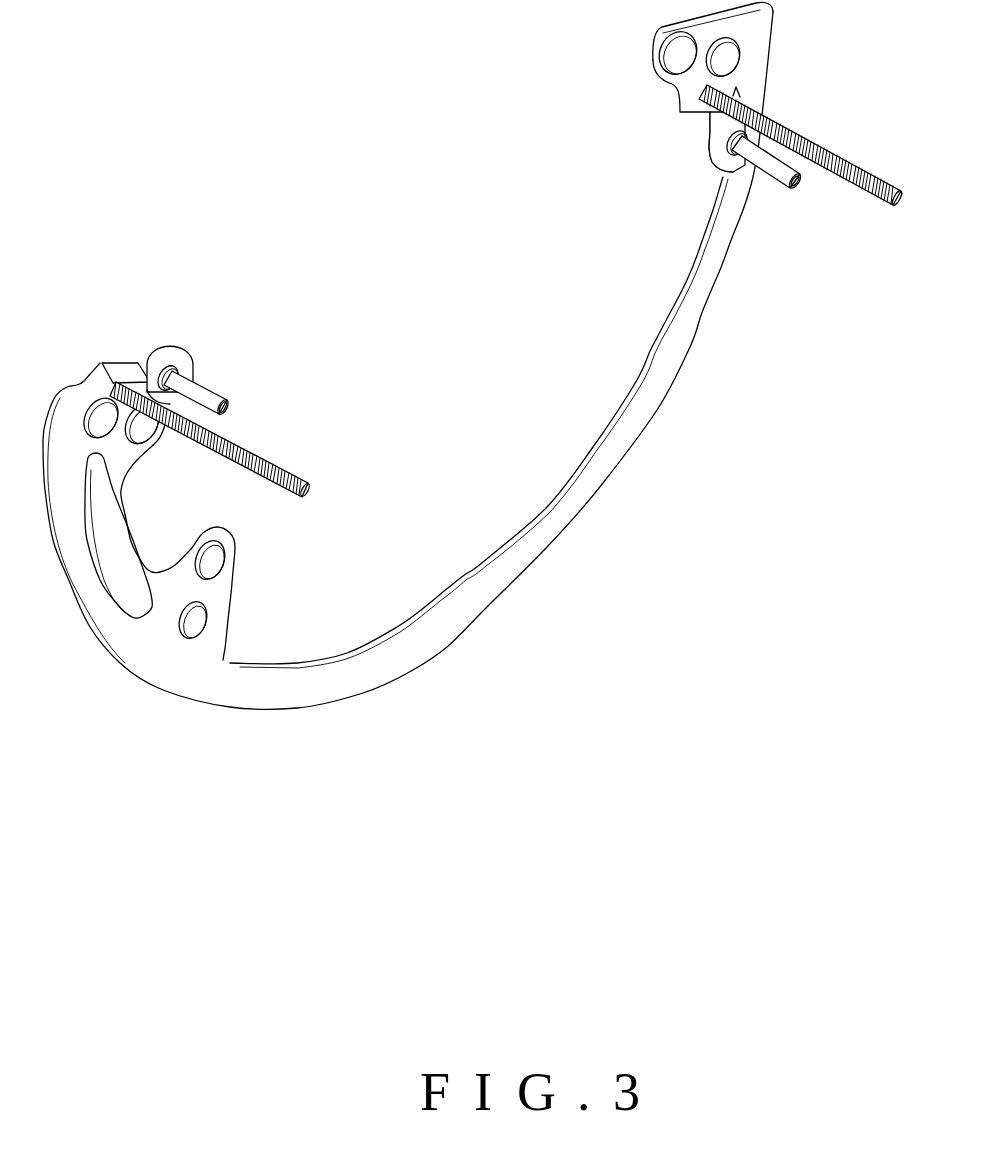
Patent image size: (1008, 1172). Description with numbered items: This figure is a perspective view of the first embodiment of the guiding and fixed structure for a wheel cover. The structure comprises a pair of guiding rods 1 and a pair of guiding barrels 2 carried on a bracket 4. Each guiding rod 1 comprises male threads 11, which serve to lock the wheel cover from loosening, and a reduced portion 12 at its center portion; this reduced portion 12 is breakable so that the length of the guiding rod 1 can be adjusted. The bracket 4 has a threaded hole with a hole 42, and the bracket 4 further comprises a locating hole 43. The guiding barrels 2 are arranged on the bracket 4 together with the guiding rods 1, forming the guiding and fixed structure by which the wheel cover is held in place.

The guiding rod 1 is at (310, 492).
The male threads 11 is at (187, 438).
The reduced portion 12 is at (250, 473).
The guiding barrel 2 is at (193, 385).
The bracket 4 is at (605, 465).
The hole 42 is at (172, 352).
The locating hole 43 is at (210, 560).